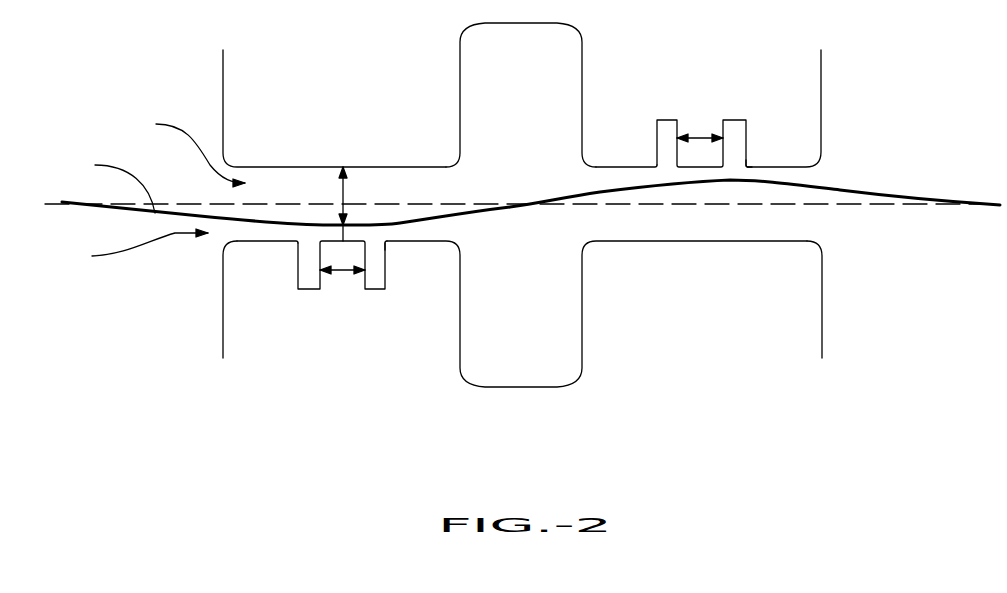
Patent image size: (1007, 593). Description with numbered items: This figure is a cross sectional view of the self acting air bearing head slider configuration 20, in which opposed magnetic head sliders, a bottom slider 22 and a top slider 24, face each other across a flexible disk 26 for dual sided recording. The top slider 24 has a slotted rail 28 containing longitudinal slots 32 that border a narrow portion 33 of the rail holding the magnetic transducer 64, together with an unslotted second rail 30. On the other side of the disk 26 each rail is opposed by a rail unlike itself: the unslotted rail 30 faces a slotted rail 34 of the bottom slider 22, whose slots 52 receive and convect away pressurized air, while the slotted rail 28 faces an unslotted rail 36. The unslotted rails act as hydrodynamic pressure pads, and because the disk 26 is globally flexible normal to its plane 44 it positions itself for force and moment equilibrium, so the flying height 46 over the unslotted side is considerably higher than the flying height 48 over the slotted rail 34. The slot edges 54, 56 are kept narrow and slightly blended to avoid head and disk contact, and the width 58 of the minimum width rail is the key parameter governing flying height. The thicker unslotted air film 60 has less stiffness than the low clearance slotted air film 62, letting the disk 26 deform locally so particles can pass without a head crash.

The self acting air bearing head slider configuration 20 is at (520, 264).
The bottom slider 22 is at (134, 247).
The top slider 24 is at (184, 150).
The flexible disk 26 is at (107, 183).
The rail of top slider 28 is at (822, 98).
The second rail of top slider 30 is at (222, 90).
The longitudinal slot 32 is at (668, 120).
The narrow portion of the rail 33 is at (700, 135).
The slotted rail of bottom slider 34 is at (222, 329).
The unslotted rail of bottom slider 36 is at (822, 322).
The plane of the disk 44 is at (823, 204).
The flying height over unslotted rail 46 is at (343, 196).
The flying height over slotted rail 48 is at (380, 233).
The slots of bottom slider rail 52 is at (310, 290).
The slot edge 54 is at (747, 167).
The slot edge 56 is at (388, 245).
The width of minimum width rail 58 is at (341, 272).
The unslotted air film 60 is at (310, 187).
The slotted air film 62 is at (270, 230).
The magnetic transducer 64 is at (747, 165).